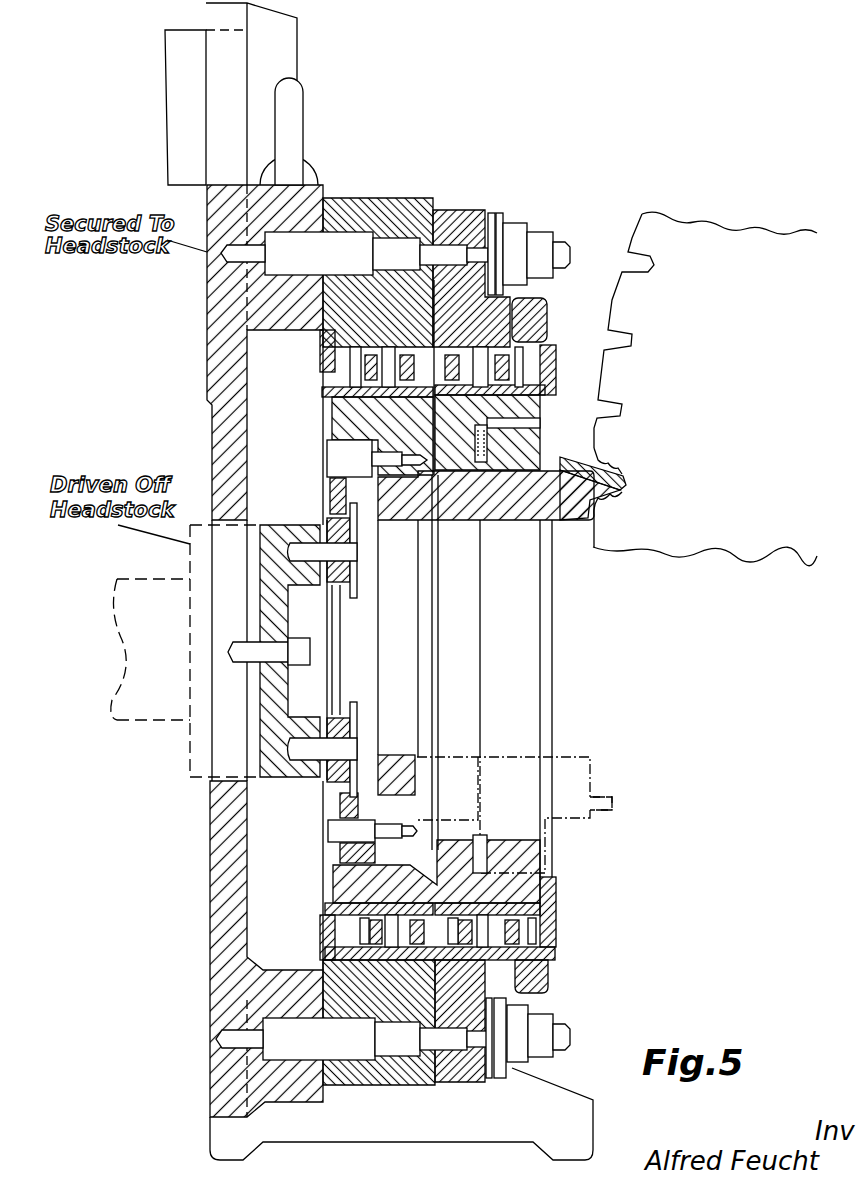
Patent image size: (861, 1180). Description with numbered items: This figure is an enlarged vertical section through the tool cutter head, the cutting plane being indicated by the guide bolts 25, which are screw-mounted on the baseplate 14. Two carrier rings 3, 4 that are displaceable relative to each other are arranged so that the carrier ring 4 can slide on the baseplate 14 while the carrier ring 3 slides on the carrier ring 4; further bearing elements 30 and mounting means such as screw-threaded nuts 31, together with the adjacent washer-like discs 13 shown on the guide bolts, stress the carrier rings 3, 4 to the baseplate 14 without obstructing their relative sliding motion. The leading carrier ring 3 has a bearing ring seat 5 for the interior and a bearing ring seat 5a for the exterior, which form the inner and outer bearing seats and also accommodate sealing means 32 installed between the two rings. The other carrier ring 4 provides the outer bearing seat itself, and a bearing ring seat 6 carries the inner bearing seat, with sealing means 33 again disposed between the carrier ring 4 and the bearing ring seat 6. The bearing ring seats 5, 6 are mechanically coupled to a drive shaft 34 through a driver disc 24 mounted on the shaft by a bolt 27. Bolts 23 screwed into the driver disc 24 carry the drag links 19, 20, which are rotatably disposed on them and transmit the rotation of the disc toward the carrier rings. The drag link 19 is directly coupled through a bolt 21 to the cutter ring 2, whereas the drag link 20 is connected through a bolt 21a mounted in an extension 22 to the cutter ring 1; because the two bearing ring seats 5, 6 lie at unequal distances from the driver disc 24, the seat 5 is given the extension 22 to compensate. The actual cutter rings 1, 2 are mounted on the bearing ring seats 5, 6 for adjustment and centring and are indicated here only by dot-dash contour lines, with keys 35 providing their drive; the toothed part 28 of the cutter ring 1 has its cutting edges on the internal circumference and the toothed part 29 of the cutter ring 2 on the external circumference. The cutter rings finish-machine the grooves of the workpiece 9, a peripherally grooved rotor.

The cutter ring 1 is at (623, 477).
The cutter ring 2 is at (590, 518).
The carrier ring 3 is at (470, 220).
The carrier ring 4 is at (408, 215).
The bearing ring seat 5 is at (517, 407).
The bearing ring seat 5a is at (547, 317).
The bearing ring seat 6 is at (400, 415).
The workpiece 9 is at (705, 389).
The washer discs 13 is at (494, 252).
The baseplate 14 is at (220, 275).
The drag link 19 is at (348, 493).
The drag link 20 is at (335, 740).
The bolt 21 is at (345, 460).
The bolt 21a is at (342, 829).
The extension 22 is at (437, 828).
The bolts 23 is at (367, 543).
The driver disc 24 is at (274, 714).
The guide bolts 25 is at (343, 248).
The bolt 27 is at (249, 650).
The toothed part 28 is at (613, 805).
The toothed part 29 is at (627, 492).
The bearing elements 30 is at (545, 253).
The screw-threaded nuts 31 is at (567, 242).
The sealing means 32 is at (552, 355).
The sealing means 33 is at (320, 353).
The drive shaft 34 is at (163, 602).
The keys 35 is at (540, 445).